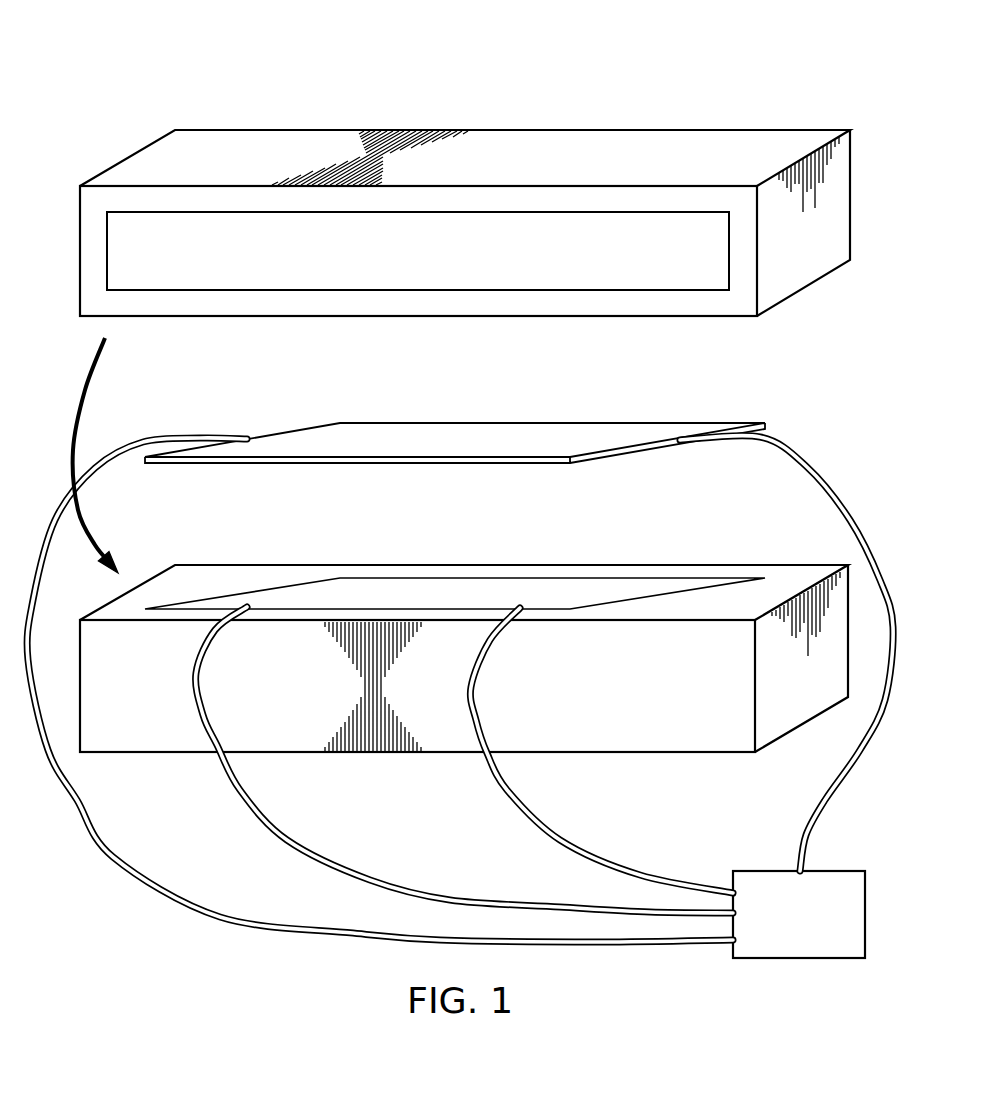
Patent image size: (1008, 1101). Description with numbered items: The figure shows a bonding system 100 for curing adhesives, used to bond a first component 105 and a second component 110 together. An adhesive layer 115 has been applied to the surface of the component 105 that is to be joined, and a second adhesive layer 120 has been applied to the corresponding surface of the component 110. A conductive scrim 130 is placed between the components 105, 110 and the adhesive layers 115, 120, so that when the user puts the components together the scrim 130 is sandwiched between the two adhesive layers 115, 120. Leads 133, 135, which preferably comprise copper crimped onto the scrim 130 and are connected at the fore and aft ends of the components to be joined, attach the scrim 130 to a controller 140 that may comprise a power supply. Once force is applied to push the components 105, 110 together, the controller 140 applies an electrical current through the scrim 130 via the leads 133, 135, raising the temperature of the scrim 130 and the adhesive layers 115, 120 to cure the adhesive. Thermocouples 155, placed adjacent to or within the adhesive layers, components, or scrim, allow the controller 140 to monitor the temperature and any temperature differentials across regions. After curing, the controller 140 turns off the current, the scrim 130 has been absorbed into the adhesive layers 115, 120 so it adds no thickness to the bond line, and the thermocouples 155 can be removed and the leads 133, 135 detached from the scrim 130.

The system 100 is at (338, 58).
The component 105 is at (697, 130).
The adhesive layer 115 is at (438, 262).
The component 110 is at (705, 568).
The adhesive layer 120 is at (400, 590).
The conductive scrim 130 is at (395, 425).
The lead 133 is at (113, 855).
The lead 135 is at (808, 467).
The controller 140 is at (818, 927).
The thermocouples 155 is at (188, 678).